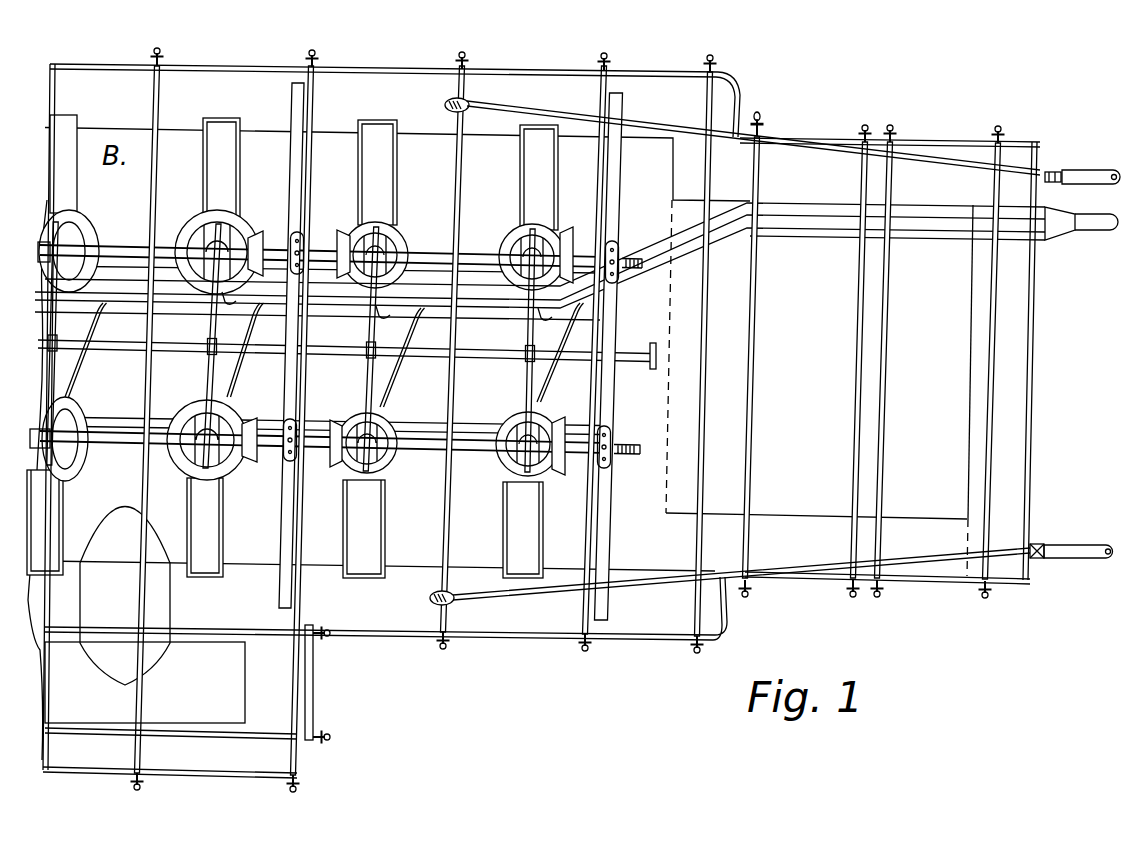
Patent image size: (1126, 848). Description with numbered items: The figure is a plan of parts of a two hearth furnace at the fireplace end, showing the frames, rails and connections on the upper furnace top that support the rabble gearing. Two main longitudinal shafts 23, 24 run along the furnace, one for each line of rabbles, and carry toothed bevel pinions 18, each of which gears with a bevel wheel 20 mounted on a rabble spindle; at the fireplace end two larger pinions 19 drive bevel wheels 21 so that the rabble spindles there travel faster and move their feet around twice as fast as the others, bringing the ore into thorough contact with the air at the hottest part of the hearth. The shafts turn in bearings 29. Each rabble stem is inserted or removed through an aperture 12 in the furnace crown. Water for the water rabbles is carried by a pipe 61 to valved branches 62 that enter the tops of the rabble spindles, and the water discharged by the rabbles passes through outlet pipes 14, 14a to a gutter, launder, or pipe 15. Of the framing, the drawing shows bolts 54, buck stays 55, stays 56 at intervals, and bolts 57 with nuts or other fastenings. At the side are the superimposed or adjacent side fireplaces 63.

The aperture 12 is at (240, 164).
The outlet pipe 14 is at (77, 377).
The outlet pipe 14a is at (235, 302).
The gutter, launder, or pipe 15 is at (38, 298).
The toothed bevel pinion 18 is at (256, 240).
The larger pinion 19 is at (346, 230).
The bevel wheel 20 is at (97, 240).
The bevel wheel 21 is at (410, 240).
The main longitudinal shaft 23 is at (476, 453).
The main longitudinal shaft 24 is at (496, 258).
The bearing 29 is at (618, 247).
The bolt 54 is at (805, 151).
The buck stay 55 is at (1096, 175).
The stay 56 is at (722, 72).
The bolt 57 is at (160, 103).
The pipe 61 is at (176, 354).
The branch 62 is at (52, 365).
The side fireplace 63 is at (145, 682).